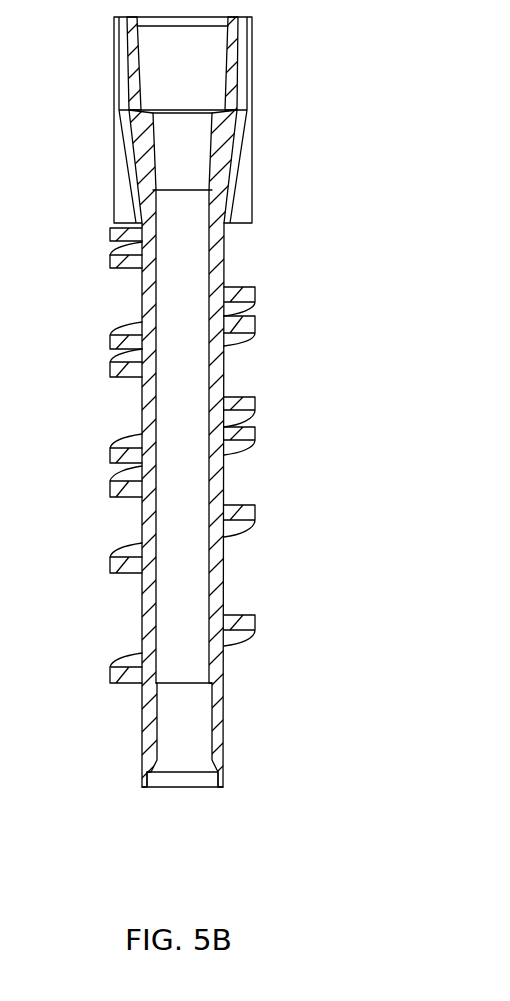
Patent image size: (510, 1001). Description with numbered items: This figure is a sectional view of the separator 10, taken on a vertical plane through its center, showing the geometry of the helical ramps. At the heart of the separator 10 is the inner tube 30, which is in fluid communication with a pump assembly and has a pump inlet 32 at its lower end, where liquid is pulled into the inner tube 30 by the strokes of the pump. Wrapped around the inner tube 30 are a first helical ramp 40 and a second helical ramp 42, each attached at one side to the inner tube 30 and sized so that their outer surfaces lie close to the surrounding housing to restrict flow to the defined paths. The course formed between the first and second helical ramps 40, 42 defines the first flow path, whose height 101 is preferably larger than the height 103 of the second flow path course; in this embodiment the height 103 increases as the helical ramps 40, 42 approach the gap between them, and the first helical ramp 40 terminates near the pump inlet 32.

The separator 10 is at (252, 172).
The inner tube 30 is at (178, 254).
The pump inlet 32 is at (178, 787).
The first helical ramp 40 is at (256, 622).
The second helical ramp 42 is at (110, 268).
The height 101 is at (52, 462).
The height 103 is at (315, 372).